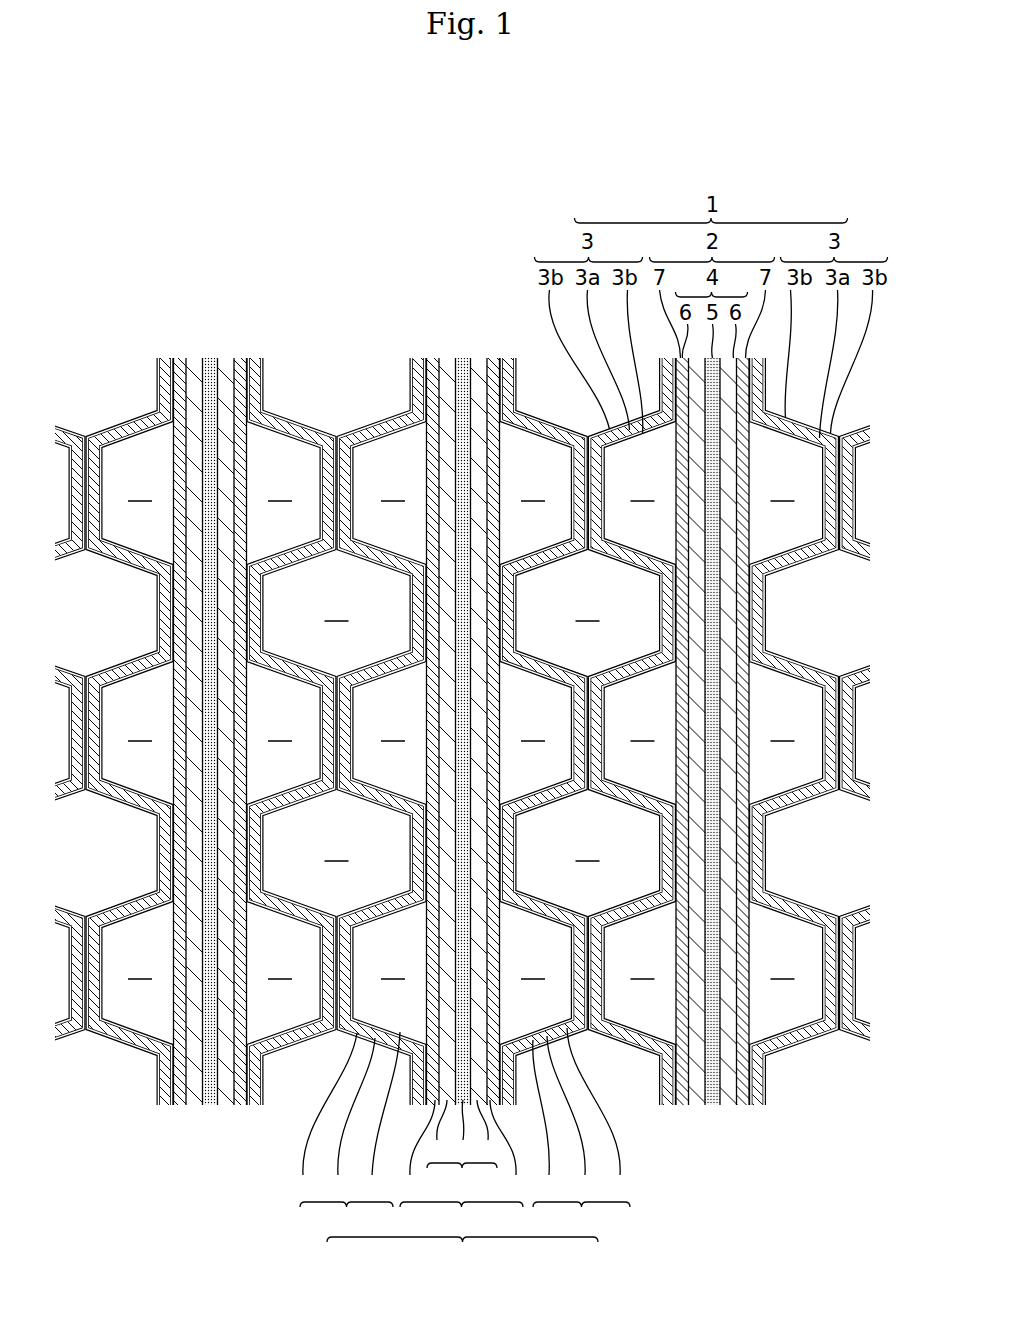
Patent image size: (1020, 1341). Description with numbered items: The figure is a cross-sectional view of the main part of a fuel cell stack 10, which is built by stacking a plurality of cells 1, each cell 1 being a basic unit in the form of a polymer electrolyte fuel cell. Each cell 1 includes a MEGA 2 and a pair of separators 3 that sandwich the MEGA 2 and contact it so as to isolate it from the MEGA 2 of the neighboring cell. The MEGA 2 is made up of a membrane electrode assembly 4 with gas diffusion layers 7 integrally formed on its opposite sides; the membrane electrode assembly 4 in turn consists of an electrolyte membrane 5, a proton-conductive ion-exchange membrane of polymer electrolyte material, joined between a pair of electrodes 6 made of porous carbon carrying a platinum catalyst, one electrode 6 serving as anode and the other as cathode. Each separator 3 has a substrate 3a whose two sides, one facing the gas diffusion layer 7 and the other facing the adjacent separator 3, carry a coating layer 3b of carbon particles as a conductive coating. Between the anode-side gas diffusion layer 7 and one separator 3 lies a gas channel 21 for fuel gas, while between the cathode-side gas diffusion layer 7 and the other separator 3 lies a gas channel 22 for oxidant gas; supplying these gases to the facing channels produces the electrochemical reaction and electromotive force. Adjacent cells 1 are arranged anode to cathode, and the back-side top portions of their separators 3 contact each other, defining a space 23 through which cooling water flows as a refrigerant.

The cell 1 is at (208, 649).
The MEGA 2 is at (209, 667).
The separator 3 is at (208, 667).
The substrate 3a is at (317, 438).
The coating layer 3b is at (328, 433).
The membrane electrode assembly 4 is at (209, 685).
The electrolyte membrane 5 is at (210, 358).
The electrode 6 is at (231, 358).
The gas diffusion layer 7 is at (243, 358).
The fuel cell stack 10 is at (781, 148).
The gas channel 21 is at (391, 729).
The gas channel 22 is at (531, 729).
The space 23 is at (462, 730).